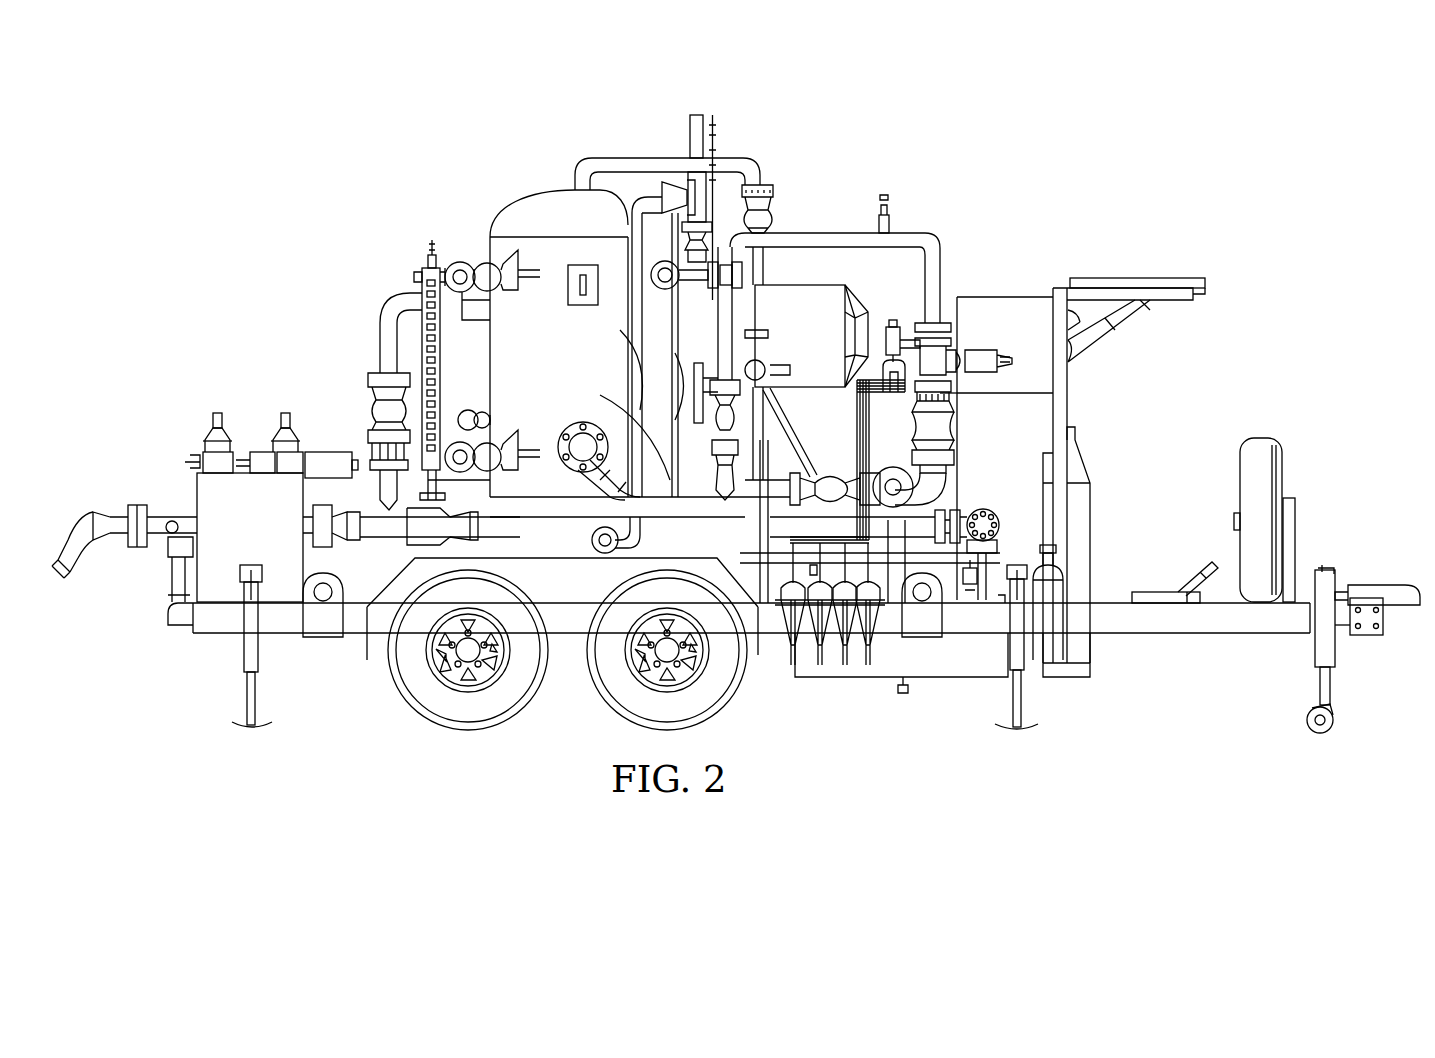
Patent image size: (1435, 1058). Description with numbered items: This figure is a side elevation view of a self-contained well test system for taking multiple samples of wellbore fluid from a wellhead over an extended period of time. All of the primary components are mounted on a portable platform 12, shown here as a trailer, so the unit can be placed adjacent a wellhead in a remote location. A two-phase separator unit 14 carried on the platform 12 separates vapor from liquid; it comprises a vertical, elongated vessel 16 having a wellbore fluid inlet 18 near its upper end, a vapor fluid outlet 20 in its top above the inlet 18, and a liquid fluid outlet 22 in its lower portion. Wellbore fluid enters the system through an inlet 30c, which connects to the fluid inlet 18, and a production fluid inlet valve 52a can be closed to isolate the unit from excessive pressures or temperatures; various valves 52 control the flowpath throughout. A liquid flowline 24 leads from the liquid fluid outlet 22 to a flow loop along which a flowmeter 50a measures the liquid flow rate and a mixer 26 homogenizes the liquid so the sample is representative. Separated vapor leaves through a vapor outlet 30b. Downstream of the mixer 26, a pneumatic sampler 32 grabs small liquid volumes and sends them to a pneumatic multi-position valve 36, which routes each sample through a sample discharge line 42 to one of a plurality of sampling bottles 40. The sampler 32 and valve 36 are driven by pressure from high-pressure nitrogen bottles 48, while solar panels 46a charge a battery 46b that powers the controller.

The platform 12 is at (238, 598).
The two-phase separator unit 14 is at (535, 148).
The vessel 16 is at (522, 205).
The wellbore fluid inlet 18 is at (485, 262).
The vapor fluid outlet 20 is at (598, 160).
The liquid fluid outlet 22 is at (575, 433).
The liquid flowline 24 is at (640, 452).
The mixer 26 is at (948, 278).
The vapor outlet 30b is at (985, 507).
The inlet 30c is at (102, 548).
The sampler 32 is at (985, 378).
The multi-position valve 36 is at (893, 325).
The sampling bottles 40 is at (792, 680).
The sample discharge line 42 is at (855, 402).
The solar panels 46a is at (1137, 278).
The battery 46b is at (1018, 297).
The nitrogen bottles 48 is at (1084, 470).
The flowmeter 50a is at (795, 285).
The valves 52 is at (774, 218).
The production fluid inlet valve 52a is at (372, 416).